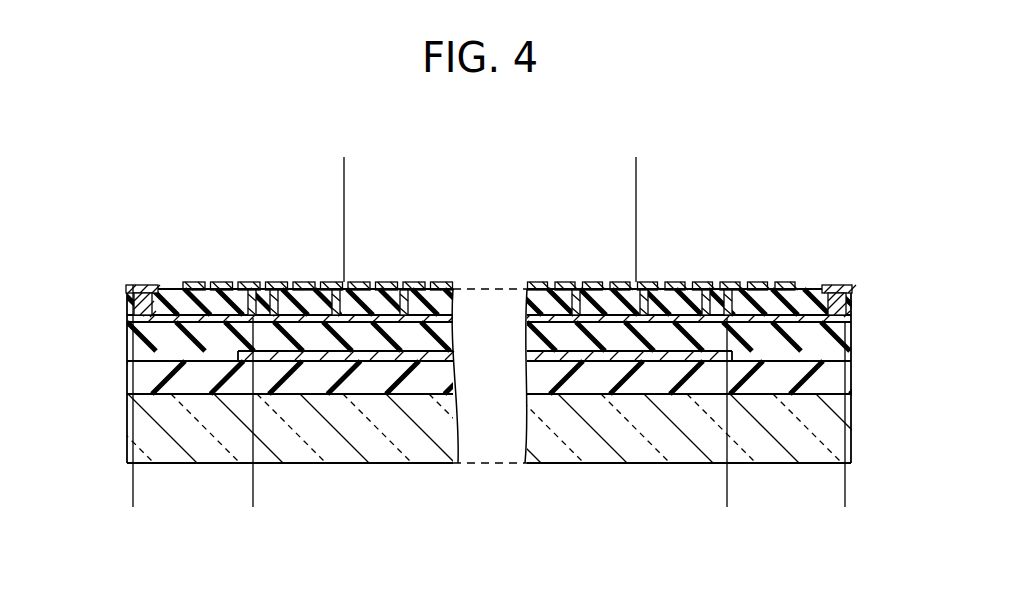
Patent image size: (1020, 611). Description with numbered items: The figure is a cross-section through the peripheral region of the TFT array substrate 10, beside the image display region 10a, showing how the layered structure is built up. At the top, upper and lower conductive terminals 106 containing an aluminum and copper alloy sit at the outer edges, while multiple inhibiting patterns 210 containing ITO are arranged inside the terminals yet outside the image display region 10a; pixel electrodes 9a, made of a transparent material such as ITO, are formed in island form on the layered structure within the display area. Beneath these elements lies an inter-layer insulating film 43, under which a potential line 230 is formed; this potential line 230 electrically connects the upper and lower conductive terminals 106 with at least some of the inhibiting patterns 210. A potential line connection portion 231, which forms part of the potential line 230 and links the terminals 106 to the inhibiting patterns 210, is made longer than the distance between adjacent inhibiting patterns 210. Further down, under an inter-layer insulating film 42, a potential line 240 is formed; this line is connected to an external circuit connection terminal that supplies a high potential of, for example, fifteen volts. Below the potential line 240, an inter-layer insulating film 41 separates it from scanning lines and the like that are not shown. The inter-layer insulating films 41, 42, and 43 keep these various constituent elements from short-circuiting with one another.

The TFT array substrate 10 is at (317, 448).
The image display region 10a is at (636, 182).
The pixel electrodes 9a is at (443, 282).
The upper and lower conductive terminals 106 is at (144, 288).
The potential line 230 is at (173, 288).
The inhibiting patterns 210 is at (183, 277).
The inter-layer insulating film 43 is at (455, 311).
The inter-layer insulating film 42 is at (455, 338).
The inter-layer insulating film 41 is at (445, 377).
The potential line 240 is at (377, 361).
The potential line connection portion 231 is at (846, 489).